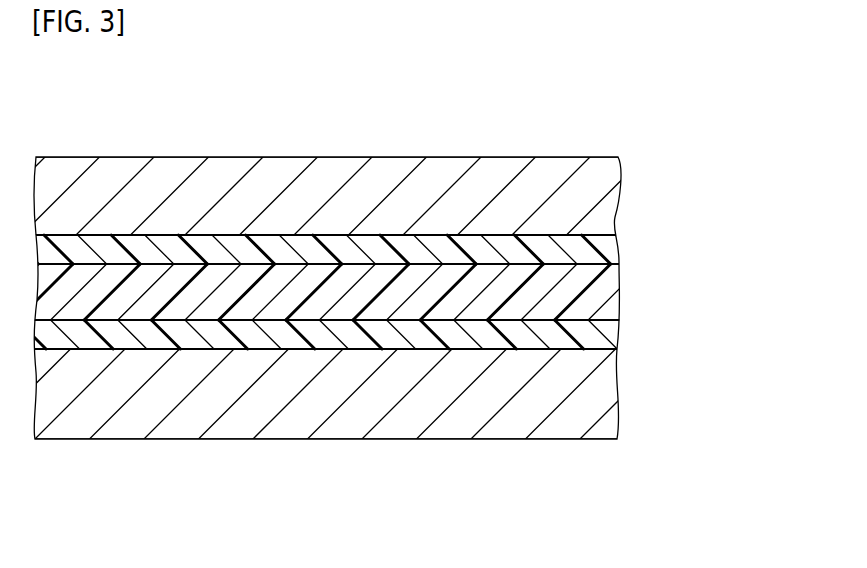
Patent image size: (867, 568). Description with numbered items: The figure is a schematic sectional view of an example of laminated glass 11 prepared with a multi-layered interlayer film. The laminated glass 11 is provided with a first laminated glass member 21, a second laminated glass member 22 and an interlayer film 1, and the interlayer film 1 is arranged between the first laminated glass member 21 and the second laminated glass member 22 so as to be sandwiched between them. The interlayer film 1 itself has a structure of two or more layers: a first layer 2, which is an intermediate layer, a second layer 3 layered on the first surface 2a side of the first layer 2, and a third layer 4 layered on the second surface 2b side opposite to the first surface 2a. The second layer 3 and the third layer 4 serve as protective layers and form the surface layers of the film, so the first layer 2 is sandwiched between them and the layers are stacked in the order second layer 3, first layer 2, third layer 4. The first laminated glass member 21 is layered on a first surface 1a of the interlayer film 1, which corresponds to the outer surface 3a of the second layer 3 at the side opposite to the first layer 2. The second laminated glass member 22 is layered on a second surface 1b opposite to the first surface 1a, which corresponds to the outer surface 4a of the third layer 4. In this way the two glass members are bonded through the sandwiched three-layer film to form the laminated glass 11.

The laminated glass 11 is at (159, 119).
The interlayer film 1 is at (254, 230).
The first surface 1a is at (337, 235).
The second surface 1b is at (332, 350).
The first layer 2 is at (629, 294).
The first surface 2a is at (430, 264).
The second surface 2b is at (419, 320).
The second layer 3 is at (629, 251).
The surface 3a is at (541, 240).
The third layer 4 is at (626, 334).
The surface 4a is at (533, 350).
The first laminated glass member 21 is at (620, 192).
The second laminated glass member 22 is at (620, 407).